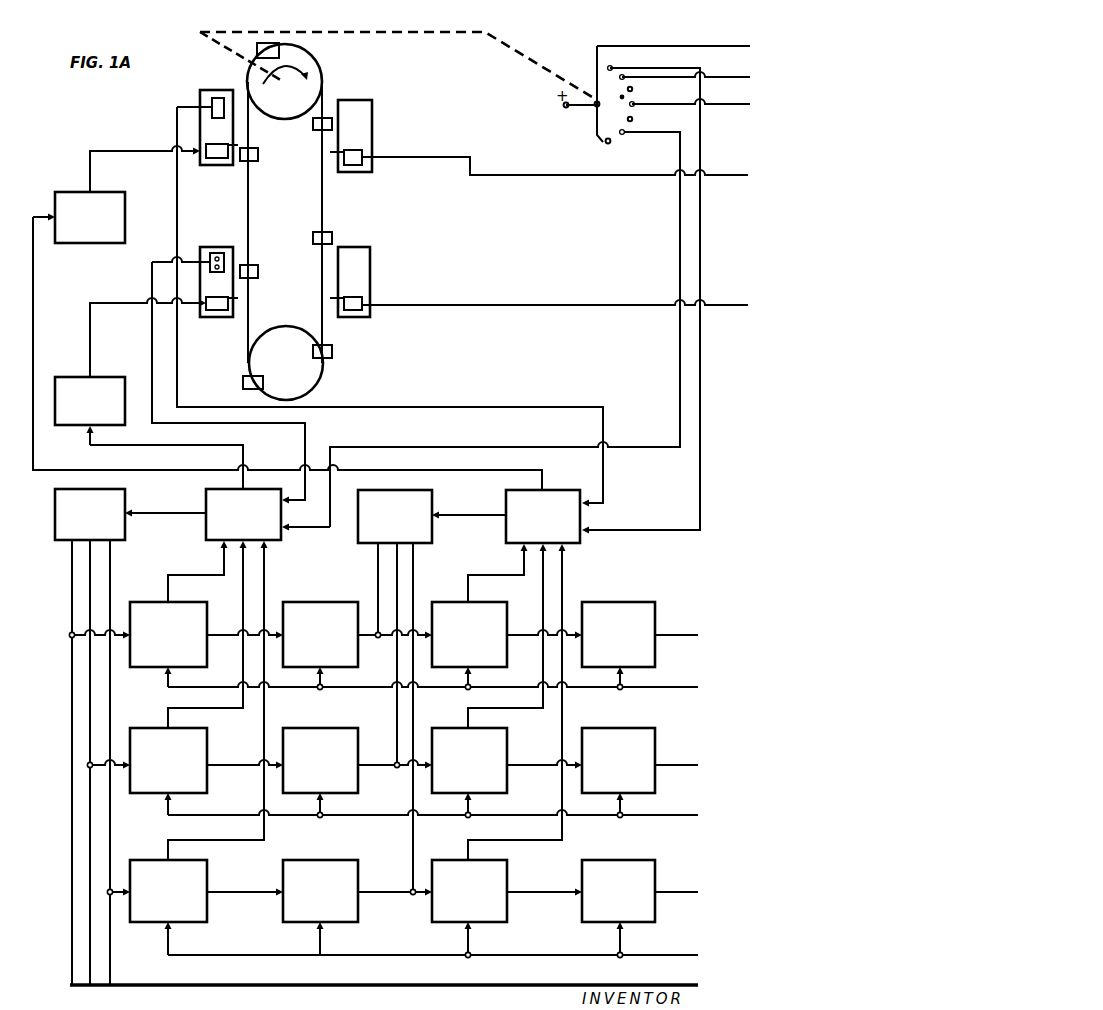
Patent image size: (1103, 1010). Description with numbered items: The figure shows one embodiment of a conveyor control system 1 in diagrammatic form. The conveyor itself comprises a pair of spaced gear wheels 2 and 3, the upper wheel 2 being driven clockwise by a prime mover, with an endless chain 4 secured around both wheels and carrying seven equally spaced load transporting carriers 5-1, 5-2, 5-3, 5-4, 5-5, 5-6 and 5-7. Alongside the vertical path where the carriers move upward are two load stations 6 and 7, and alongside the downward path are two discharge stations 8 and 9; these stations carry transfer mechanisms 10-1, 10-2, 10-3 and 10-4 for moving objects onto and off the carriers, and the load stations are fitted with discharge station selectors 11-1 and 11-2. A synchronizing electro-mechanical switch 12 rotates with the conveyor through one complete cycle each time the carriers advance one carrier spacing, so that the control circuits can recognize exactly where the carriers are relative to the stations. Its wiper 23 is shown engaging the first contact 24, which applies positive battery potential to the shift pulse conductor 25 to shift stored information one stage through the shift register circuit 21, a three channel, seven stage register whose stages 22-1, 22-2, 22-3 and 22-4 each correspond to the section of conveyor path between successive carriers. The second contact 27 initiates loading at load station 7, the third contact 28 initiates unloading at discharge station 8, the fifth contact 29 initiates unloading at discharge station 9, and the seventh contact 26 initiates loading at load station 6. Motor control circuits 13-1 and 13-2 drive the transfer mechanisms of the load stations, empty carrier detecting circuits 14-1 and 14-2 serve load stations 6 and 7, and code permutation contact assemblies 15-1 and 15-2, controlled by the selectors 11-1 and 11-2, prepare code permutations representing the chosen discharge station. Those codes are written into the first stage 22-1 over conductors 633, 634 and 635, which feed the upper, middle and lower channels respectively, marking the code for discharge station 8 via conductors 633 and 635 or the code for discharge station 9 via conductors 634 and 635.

The recording apparatus 1 is at (322, 24).
The gear wheel 2 is at (318, 64).
The gear wheel 3 is at (313, 393).
The endless chain 4 is at (323, 218).
The load transporting carrier 5-1 is at (243, 383).
The load transporting carrier 5-2 is at (258, 270).
The load transporting carrier 5-3 is at (259, 154).
The load transporting carrier 5-4 is at (268, 43).
The load transporting carrier 5-5 is at (313, 127).
The load transporting carrier 5-6 is at (313, 236).
The load transporting carrier 5-7 is at (332, 351).
The load station 6 is at (230, 248).
The load station 7 is at (231, 92).
The discharge station 8 is at (358, 100).
The discharge station 9 is at (362, 247).
The transfer mechanism 10-1 is at (222, 311).
The transfer mechanism 10-2 is at (222, 158).
The transfer mechanism 10-3 is at (364, 157).
The transfer mechanism 10-4 is at (364, 305).
The discharge station selector 11-1 is at (212, 254).
The discharge station selector 11-2 is at (212, 100).
The synchronizing electro-mechanical switch 12 is at (578, 82).
The motor control circuit 13-1 is at (88, 377).
The motor control circuit 13-2 is at (88, 192).
The empty carrier detecting circuit 14-1 is at (206, 492).
The empty carrier detecting circuit 14-2 is at (518, 490).
The code permutation contact assembly 15-1 is at (75, 489).
The code permutation contact assembly 15-2 is at (362, 522).
The shift register circuit 21 is at (60, 715).
The shift register stage 22-1 is at (162, 602).
The shift register stage 22-2 is at (333, 602).
The shift register stage 22-3 is at (466, 602).
The shift register stage 22-4 is at (627, 602).
The wiper 23 is at (597, 110).
The contact 24 is at (597, 68).
The shift pulse conductor 25 is at (672, 46).
The seventh contact 26 is at (624, 133).
The second contact 27 is at (614, 67).
The third contact 28 is at (625, 78).
The fifth contact 29 is at (634, 106).
The conductor 633 is at (72, 586).
The conductor 634 is at (90, 665).
The conductor 635 is at (108, 822).